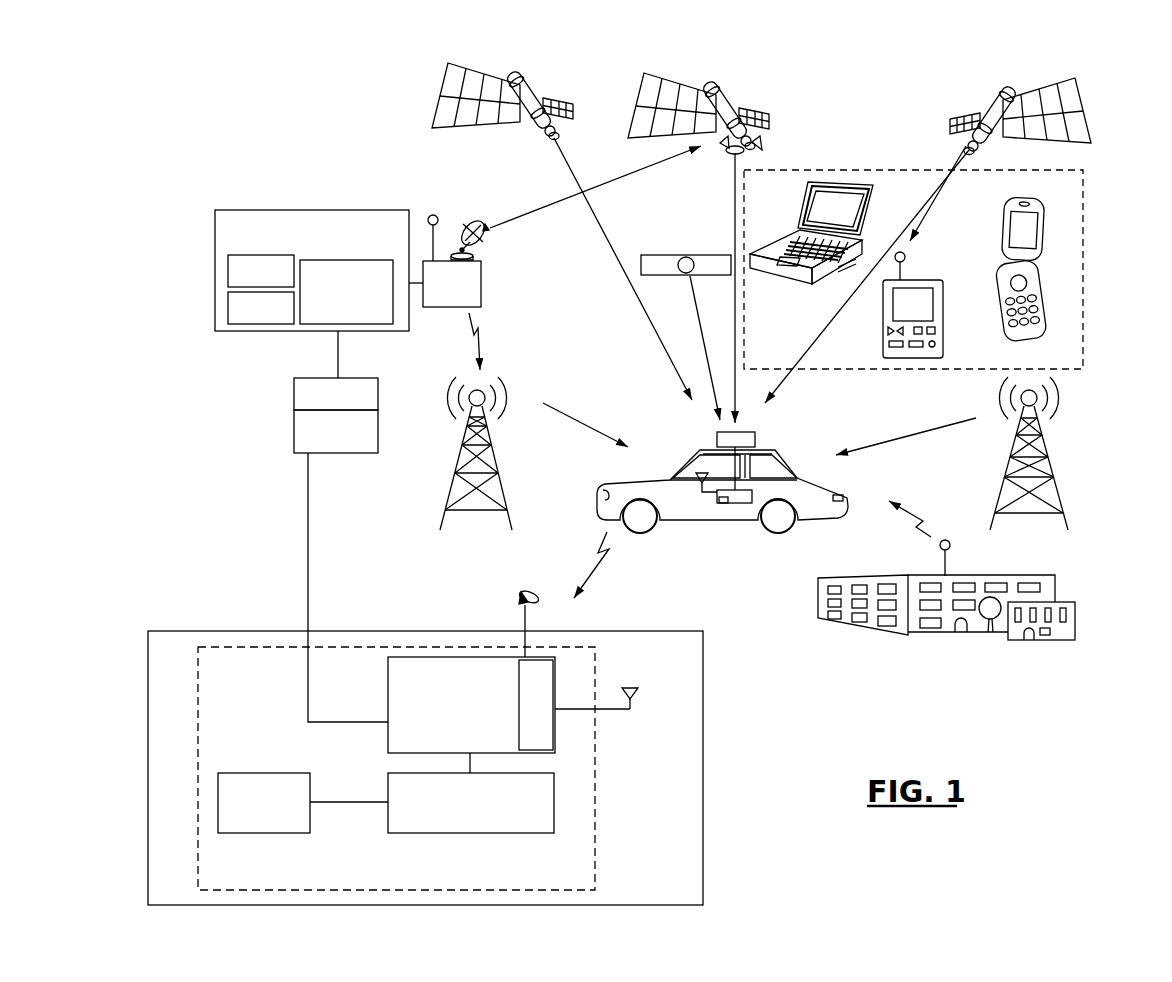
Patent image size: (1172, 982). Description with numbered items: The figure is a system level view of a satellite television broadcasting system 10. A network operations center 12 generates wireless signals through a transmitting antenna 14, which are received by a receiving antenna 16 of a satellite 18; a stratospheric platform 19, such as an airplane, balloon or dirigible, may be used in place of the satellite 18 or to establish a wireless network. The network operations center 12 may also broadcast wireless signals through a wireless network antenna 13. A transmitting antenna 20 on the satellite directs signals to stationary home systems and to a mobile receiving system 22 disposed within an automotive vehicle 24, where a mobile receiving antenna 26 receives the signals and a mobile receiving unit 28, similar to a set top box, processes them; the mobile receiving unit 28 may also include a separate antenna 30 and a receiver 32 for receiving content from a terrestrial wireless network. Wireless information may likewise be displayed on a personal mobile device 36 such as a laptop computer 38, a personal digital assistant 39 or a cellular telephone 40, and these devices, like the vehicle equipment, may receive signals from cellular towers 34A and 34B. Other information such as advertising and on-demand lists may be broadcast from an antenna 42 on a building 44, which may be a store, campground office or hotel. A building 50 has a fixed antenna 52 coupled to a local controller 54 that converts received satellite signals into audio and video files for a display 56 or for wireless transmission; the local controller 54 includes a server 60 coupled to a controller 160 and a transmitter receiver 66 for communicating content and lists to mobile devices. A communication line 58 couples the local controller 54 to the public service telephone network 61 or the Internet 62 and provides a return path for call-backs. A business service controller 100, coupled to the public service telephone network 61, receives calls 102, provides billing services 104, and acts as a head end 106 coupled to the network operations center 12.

The satellite television broadcasting system 10 is at (856, 84).
The network operations center 12 is at (482, 285).
The wireless network antenna 13 is at (421, 232).
The transmitting antenna 14 is at (486, 243).
The receiving antenna 16 is at (723, 158).
The satellite 18 is at (540, 92).
The stratospheric platform 19 is at (683, 255).
The transmitting antenna 20 is at (758, 150).
The mobile receiving system 22 is at (737, 469).
The automotive vehicle 24 is at (848, 488).
The mobile receiving antenna 26 is at (717, 440).
The mobile receiving unit 28 is at (736, 505).
The separate antenna 30 is at (702, 488).
The receiver 32 is at (722, 504).
The cellular tower 34A is at (492, 462).
The cellular tower 34B is at (1012, 461).
The personal mobile device 36 is at (1083, 201).
The laptop computer 38 is at (779, 296).
The personal digital assistant 39 is at (930, 280).
The cellular telephone 40 is at (1002, 250).
The antenna 42 is at (950, 545).
The building 44 is at (1020, 576).
The building 50 is at (178, 631).
The fixed antenna 52 is at (521, 595).
The local controller 54 is at (345, 647).
The display 56 is at (310, 816).
The communication line 58 is at (306, 563).
The server 60 is at (554, 783).
The public service telephone network 61 is at (294, 386).
The Internet 62 is at (360, 453).
The transmitter receiver 66 is at (556, 672).
The business service controller 100 is at (276, 210).
The calls 102 is at (215, 262).
The billing services 104 is at (215, 302).
The head end 106 is at (380, 331).
The controller 160 is at (388, 690).